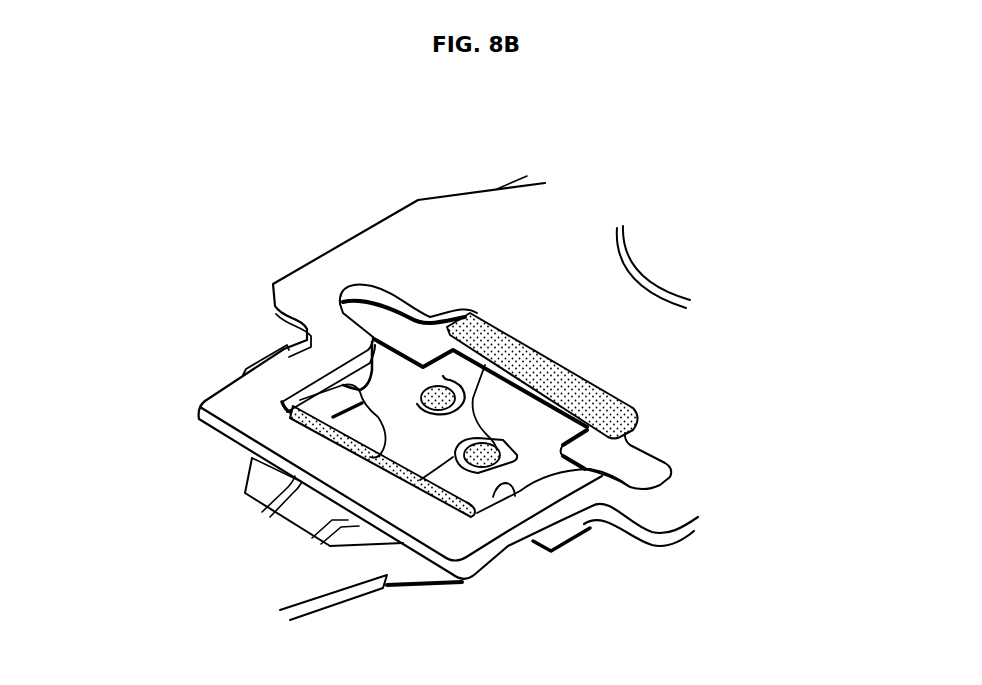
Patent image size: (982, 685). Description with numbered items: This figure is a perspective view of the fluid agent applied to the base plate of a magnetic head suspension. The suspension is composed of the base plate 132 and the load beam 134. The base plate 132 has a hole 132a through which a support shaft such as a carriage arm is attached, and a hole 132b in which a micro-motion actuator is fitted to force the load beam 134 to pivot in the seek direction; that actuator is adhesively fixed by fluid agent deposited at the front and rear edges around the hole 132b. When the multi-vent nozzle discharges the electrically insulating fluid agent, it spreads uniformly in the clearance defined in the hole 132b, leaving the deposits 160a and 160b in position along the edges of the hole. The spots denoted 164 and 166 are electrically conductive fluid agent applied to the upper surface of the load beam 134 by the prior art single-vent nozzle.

The base plate 132 is at (465, 217).
The hole 132a is at (638, 273).
The hole 132b is at (478, 502).
The load beam 134 is at (299, 574).
The deposit of fluid agent 160a is at (427, 493).
The deposit of fluid agent 160b is at (575, 385).
The deposit of electrically conductive fluid agent 164 is at (438, 393).
The deposit of electrically conductive fluid agent 166 is at (497, 452).